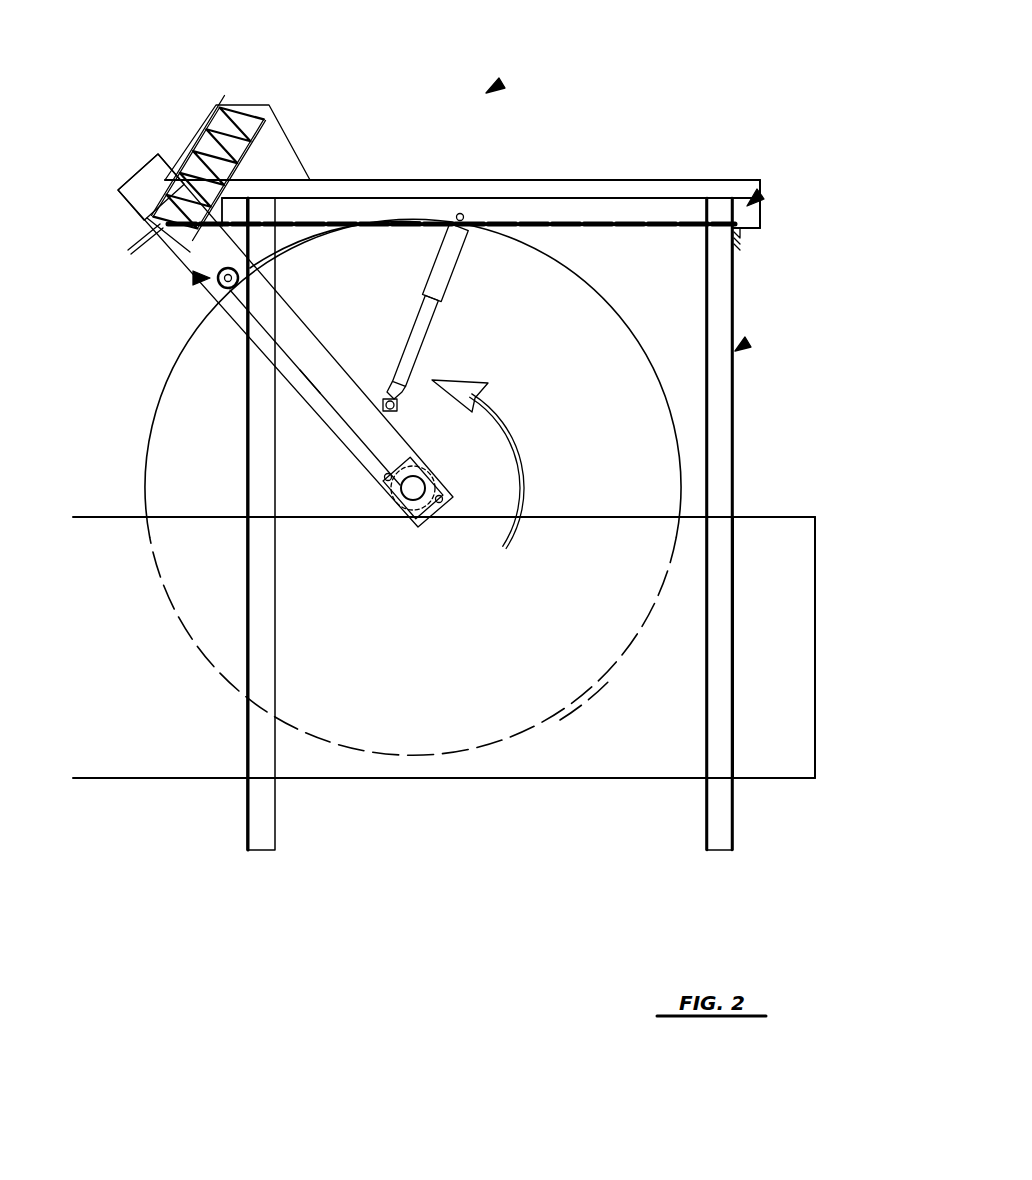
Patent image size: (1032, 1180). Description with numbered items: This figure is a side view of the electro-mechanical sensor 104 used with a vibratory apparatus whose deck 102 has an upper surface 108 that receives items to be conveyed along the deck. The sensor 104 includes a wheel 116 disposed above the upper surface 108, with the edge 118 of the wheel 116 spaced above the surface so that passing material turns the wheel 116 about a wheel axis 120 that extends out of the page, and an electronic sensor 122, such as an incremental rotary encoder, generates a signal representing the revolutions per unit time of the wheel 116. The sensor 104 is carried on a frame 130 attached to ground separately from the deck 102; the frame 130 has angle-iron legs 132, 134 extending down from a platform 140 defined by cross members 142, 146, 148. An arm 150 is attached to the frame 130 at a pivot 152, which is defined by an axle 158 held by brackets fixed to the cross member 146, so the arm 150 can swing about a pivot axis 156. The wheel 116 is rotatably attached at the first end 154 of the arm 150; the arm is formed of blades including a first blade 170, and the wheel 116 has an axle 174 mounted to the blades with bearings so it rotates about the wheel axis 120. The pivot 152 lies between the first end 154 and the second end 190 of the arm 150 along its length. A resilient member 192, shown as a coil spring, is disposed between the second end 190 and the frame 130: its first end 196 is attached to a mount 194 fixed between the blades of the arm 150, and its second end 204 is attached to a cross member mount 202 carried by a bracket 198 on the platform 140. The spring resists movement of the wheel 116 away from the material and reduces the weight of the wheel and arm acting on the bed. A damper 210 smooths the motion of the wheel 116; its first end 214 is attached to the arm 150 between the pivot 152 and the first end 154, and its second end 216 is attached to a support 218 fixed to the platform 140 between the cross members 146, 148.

The deck 102 is at (818, 545).
The electro-mechanical sensor 104 is at (500, 80).
The upper surface 108 is at (818, 773).
The wheel 116 is at (420, 487).
The edge 118 is at (588, 700).
The wheel axis 120 is at (422, 505).
The electronic sensor 122 is at (440, 478).
The frame 130 is at (505, 476).
The leg 132 is at (277, 835).
The leg 134 is at (705, 830).
The platform 140 is at (760, 191).
The cross member 142 is at (505, 202).
The cross member 146 is at (250, 220).
The cross member 148 is at (745, 235).
The arm 150 is at (240, 339).
The pivot 152 is at (193, 280).
The first end 154 is at (380, 455).
The pivot axis 156 is at (240, 278).
The axle 158 is at (258, 270).
The first blade 170 is at (318, 385).
The axle 174 is at (423, 510).
The second end 190 is at (120, 185).
The resilient member 192 is at (180, 143).
The mount 194 is at (127, 252).
The first end 196 is at (130, 228).
The bracket 198 is at (263, 152).
The cross member mount 202 is at (245, 108).
The second end 204 is at (201, 137).
The damper 210 is at (434, 264).
The first end 214 is at (383, 400).
The second end 216 is at (458, 213).
The support 218 is at (527, 183).